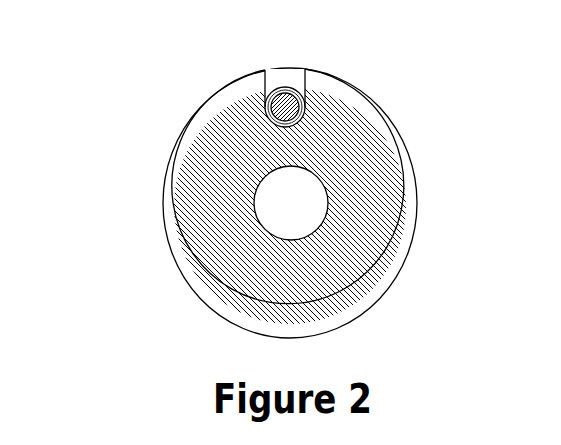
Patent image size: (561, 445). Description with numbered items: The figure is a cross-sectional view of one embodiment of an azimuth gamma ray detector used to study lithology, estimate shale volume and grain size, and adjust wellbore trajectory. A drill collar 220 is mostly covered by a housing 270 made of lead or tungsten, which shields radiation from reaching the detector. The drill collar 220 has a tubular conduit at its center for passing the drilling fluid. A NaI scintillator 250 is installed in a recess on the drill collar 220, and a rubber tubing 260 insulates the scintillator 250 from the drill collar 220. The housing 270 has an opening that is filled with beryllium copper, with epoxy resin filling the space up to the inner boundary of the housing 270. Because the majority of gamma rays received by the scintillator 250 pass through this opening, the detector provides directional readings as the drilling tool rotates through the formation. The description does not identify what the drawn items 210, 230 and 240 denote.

The heating element / rod 210 is at (290, 107).
The drill collar 220 is at (360, 168).
The central bore 230 is at (294, 214).
The slot 240 is at (327, 53).
The NaI scintillator 250 is at (268, 88).
The rubber tubing 260 is at (222, 116).
The housing 270 is at (162, 210).